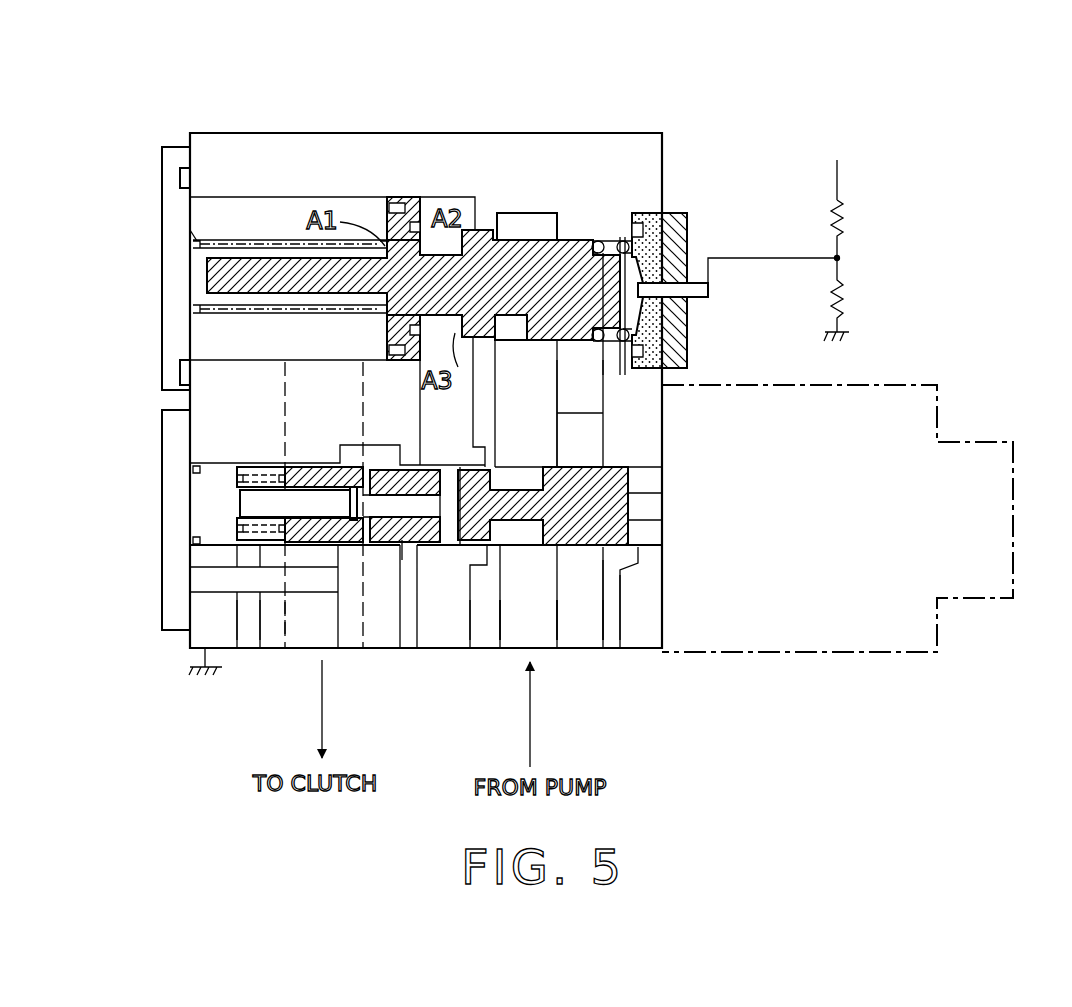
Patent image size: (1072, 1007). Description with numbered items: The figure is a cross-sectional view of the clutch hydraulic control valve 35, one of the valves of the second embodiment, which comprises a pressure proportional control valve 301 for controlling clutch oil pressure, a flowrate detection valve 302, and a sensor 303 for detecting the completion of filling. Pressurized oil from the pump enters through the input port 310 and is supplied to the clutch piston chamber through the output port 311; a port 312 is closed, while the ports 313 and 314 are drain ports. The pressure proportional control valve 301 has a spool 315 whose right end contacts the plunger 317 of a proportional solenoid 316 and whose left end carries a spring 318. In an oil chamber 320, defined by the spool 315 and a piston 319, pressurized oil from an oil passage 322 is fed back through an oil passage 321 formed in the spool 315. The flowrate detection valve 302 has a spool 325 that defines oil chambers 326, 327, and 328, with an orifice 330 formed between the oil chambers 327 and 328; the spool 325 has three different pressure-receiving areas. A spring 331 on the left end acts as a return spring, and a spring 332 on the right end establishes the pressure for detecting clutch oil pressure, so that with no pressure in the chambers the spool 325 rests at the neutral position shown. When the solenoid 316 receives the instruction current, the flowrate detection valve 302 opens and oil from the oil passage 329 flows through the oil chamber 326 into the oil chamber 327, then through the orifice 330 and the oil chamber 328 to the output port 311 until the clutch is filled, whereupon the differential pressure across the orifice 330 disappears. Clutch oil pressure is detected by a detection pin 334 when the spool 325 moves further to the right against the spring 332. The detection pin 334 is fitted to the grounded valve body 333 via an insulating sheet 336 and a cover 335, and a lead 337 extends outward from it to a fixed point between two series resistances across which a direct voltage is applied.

The clutch hydraulic control valve 35 is at (412, 90).
The pressure proportional control valve 301 is at (525, 467).
The flowrate detection valve 302 is at (583, 205).
The sensor 303 is at (758, 256).
The input port 310 is at (542, 650).
The output port 311 is at (295, 650).
The port 312 is at (455, 650).
The drain port 313 is at (610, 650).
The drain port 314 is at (385, 500).
The spool 315 is at (662, 535).
The solenoid 316 is at (785, 653).
The plunger 317 is at (660, 477).
The spring 318 is at (250, 467).
The piston 319 is at (240, 498).
The oil chamber 320 is at (320, 495).
The oil passage 321 is at (358, 650).
The oil passage 322 is at (432, 412).
The spool 325 is at (490, 237).
The oil chamber 326 is at (523, 221).
The oil chamber 327 is at (427, 200).
The oil chamber 328 is at (295, 208).
The oil passage 329 is at (532, 388).
The orifice 330 is at (400, 335).
The spring 331 is at (190, 232).
The spring 332 is at (620, 237).
The valve body 333 is at (238, 157).
The detection pin 334 is at (703, 297).
The cover 335 is at (688, 228).
The insulating sheet 336 is at (657, 338).
The lead 337 is at (790, 259).